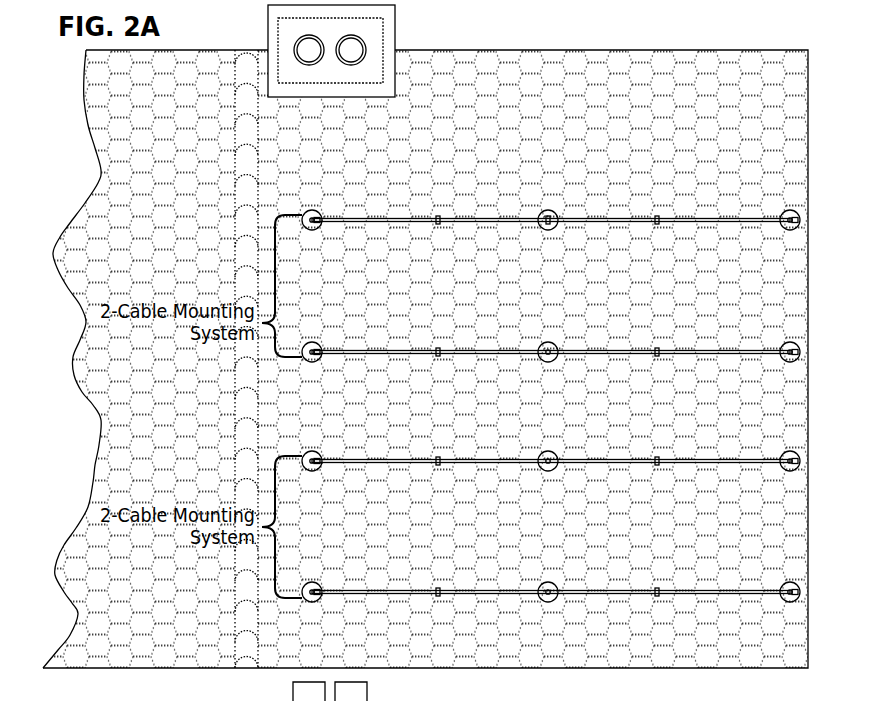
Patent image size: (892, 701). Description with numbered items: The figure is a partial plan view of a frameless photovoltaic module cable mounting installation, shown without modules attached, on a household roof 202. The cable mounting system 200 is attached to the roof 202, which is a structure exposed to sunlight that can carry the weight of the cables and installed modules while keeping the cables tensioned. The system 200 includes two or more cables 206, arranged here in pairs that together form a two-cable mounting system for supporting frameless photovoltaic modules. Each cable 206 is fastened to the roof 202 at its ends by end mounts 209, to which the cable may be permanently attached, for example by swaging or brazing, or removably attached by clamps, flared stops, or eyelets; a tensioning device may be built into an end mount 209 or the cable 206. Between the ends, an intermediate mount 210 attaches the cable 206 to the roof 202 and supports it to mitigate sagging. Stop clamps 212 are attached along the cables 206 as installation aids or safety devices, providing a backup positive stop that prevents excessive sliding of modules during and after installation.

The cable mounting system 200 is at (647, 26).
The roof 202 is at (425, 334).
The cable 206 is at (551, 368).
The end mount 209 is at (551, 355).
The intermediate mount 210 is at (586, 385).
The stop clamp 212 is at (547, 356).